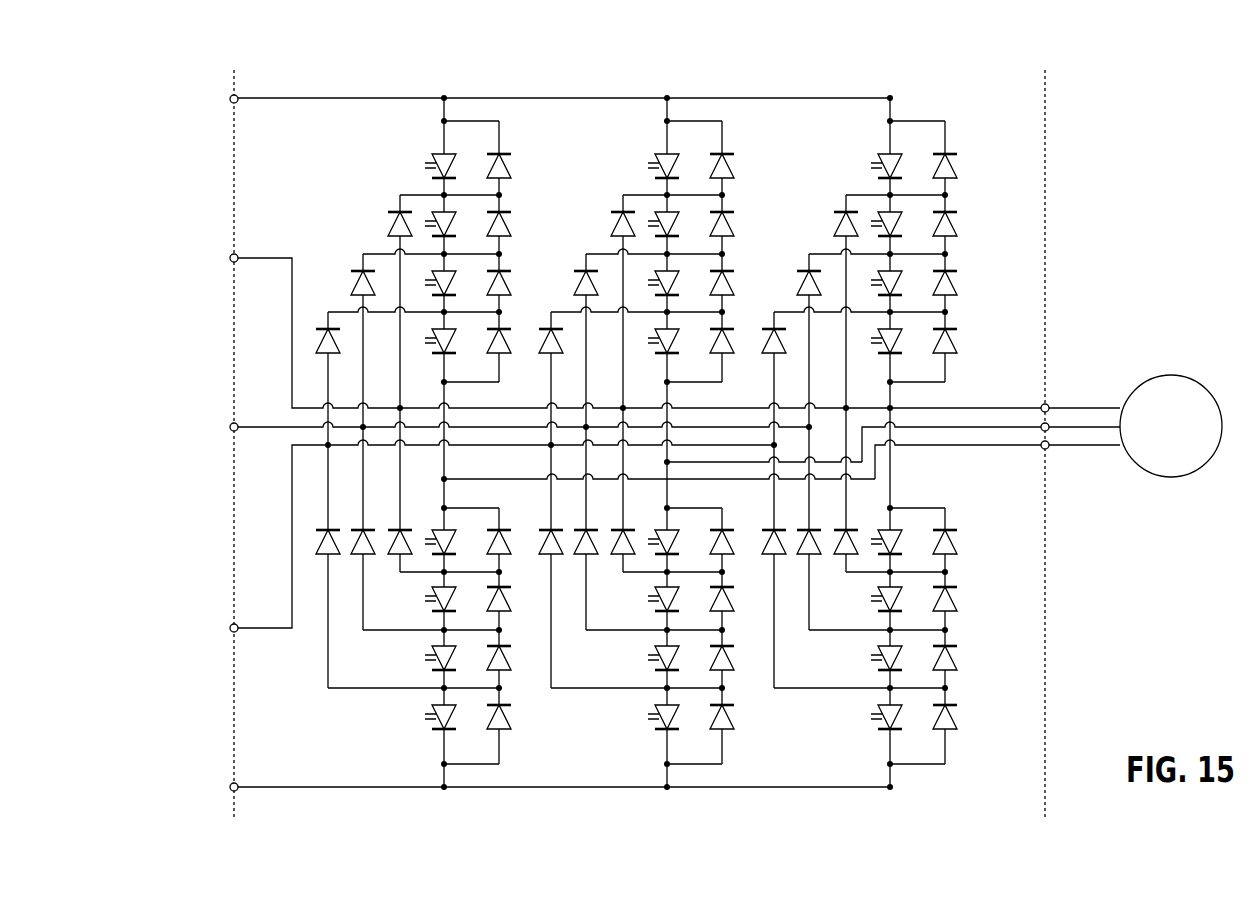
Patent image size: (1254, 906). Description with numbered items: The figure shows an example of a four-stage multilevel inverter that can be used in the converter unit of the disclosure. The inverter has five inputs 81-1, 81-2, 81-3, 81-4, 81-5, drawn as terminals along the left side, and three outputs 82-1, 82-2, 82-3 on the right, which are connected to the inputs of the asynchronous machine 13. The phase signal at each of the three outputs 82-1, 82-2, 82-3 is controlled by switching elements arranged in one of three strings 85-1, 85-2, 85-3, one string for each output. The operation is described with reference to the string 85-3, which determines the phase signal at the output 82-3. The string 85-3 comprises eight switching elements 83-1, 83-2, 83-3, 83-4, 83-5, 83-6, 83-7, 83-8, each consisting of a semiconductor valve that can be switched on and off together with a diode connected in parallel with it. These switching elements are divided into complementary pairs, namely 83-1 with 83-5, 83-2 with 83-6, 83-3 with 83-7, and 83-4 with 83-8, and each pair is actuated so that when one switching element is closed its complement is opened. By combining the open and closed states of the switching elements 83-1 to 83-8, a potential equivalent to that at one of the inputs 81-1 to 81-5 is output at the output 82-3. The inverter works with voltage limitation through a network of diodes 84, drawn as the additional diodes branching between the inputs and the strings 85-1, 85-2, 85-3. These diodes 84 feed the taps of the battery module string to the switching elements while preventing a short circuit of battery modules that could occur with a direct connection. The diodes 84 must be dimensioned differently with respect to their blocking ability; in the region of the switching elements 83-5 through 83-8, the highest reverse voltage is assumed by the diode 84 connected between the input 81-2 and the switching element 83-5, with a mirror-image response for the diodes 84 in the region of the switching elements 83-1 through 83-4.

The input 81-1 is at (230, 788).
The input 81-2 is at (230, 629).
The input 81-3 is at (230, 428).
The input 81-4 is at (230, 259).
The input 81-5 is at (230, 100).
The output 82-1 is at (1050, 448).
The output 82-2 is at (1050, 424).
The output 82-3 is at (1050, 404).
The switching element 83-1 is at (957, 718).
The switching element 83-2 is at (957, 659).
The switching element 83-3 is at (957, 600).
The switching element 83-4 is at (957, 543).
The switching element 83-5 is at (957, 342).
The switching element 83-6 is at (957, 284).
The switching element 83-7 is at (957, 225).
The switching element 83-8 is at (957, 167).
The diode 84 is at (835, 226).
The string 85-1 is at (413, 457).
The string 85-2 is at (636, 457).
The string 85-3 is at (889, 457).
The asynchronous machine 13 is at (1172, 478).